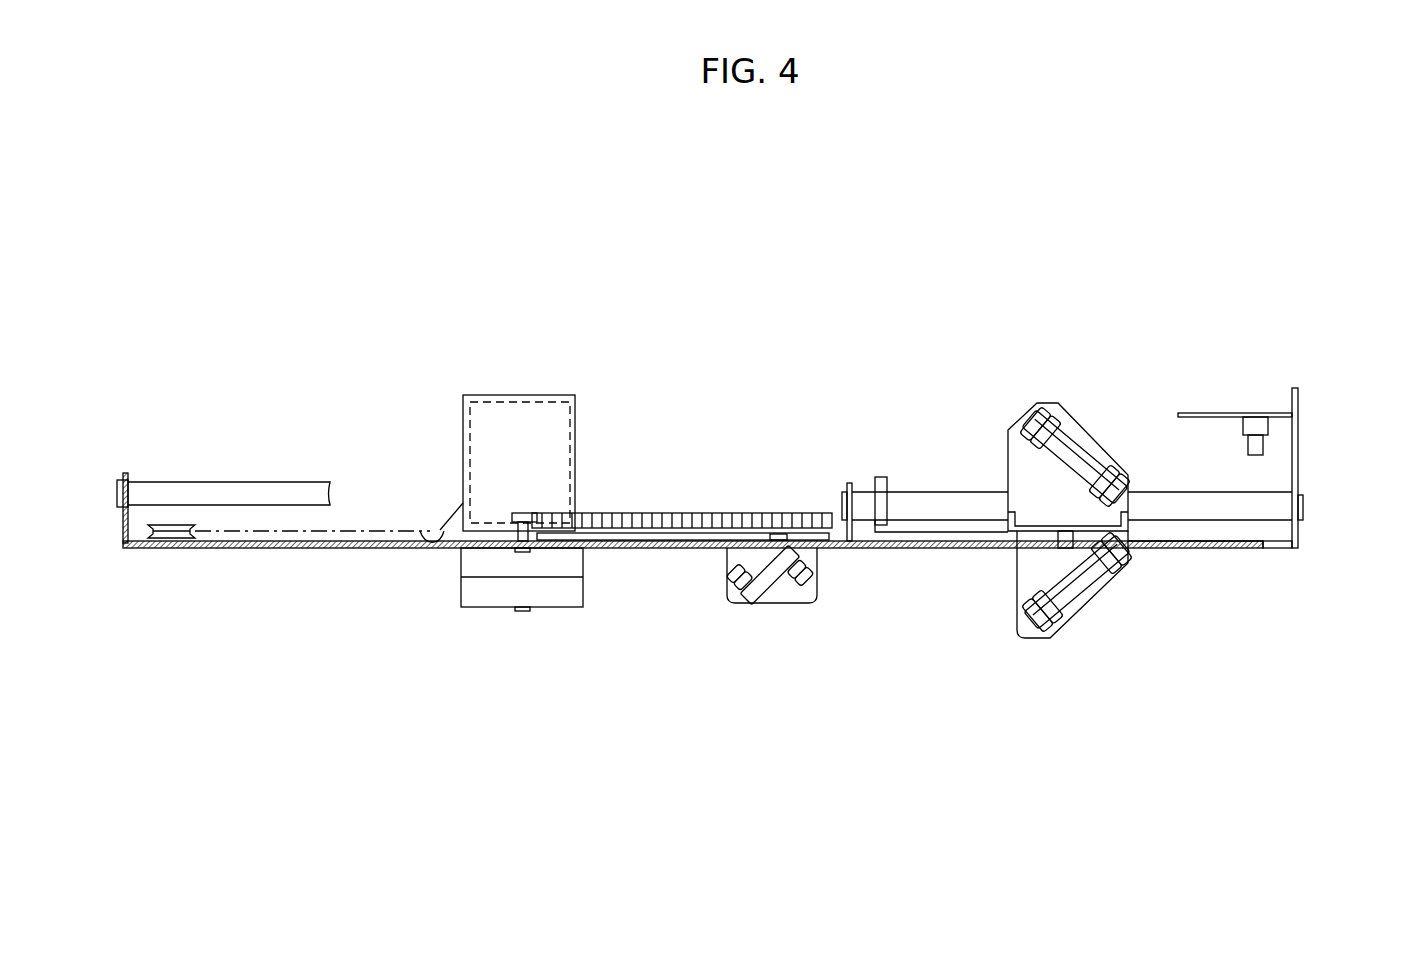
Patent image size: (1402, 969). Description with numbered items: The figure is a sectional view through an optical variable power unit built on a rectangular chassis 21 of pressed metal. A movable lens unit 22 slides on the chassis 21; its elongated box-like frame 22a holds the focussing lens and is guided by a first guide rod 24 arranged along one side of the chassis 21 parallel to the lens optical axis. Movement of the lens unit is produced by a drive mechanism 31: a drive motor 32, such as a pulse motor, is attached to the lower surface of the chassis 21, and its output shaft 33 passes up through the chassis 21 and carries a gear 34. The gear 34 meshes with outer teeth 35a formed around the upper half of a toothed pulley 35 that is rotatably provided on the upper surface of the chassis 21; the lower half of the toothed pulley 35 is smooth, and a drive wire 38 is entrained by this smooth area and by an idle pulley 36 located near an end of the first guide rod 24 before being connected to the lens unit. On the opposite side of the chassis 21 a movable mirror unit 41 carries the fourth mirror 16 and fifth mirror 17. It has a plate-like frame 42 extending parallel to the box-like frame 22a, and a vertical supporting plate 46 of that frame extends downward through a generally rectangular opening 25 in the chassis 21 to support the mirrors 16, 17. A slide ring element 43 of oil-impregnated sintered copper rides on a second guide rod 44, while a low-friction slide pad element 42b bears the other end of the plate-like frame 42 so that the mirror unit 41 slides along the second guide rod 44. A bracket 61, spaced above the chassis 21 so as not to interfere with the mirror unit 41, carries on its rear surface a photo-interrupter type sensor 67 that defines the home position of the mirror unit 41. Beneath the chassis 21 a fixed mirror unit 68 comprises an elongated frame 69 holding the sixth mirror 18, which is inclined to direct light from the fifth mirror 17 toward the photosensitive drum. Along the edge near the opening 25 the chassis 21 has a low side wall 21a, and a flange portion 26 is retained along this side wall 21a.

The fourth mirror 16 is at (1068, 462).
The fifth mirror 17 is at (1068, 580).
The sixth mirror 18 is at (772, 590).
The rectangular chassis 21 is at (331, 559).
The side wall 21a is at (1311, 535).
The movable lens unit 22 is at (562, 437).
The box-like frame 22a is at (520, 395).
The first guide rod 24 is at (272, 495).
The rectangular opening 25 is at (1226, 549).
The flange portion 26 is at (1280, 549).
The drive mechanism 31 is at (505, 583).
The drive motor 32 is at (490, 596).
The output shaft 33 is at (512, 545).
The gear 34 is at (520, 513).
The toothed pulley 35 is at (682, 551).
The outer teeth 35a is at (654, 513).
The idle pulley 36 is at (172, 525).
The drive wire 38 is at (388, 523).
The movable mirror unit 41 is at (1069, 603).
The plate-like frame 42 is at (1050, 469).
The slide pad element 42b is at (1066, 538).
The slide ring element 43 is at (878, 477).
The second guide rod 44 is at (948, 506).
The vertical supporting plate 46 is at (1133, 490).
The bracket 61 is at (1232, 413).
The photo-interrupter type sensor 67 is at (1243, 427).
The fixed mirror unit 68 is at (781, 592).
The elongated frame 69 is at (735, 582).